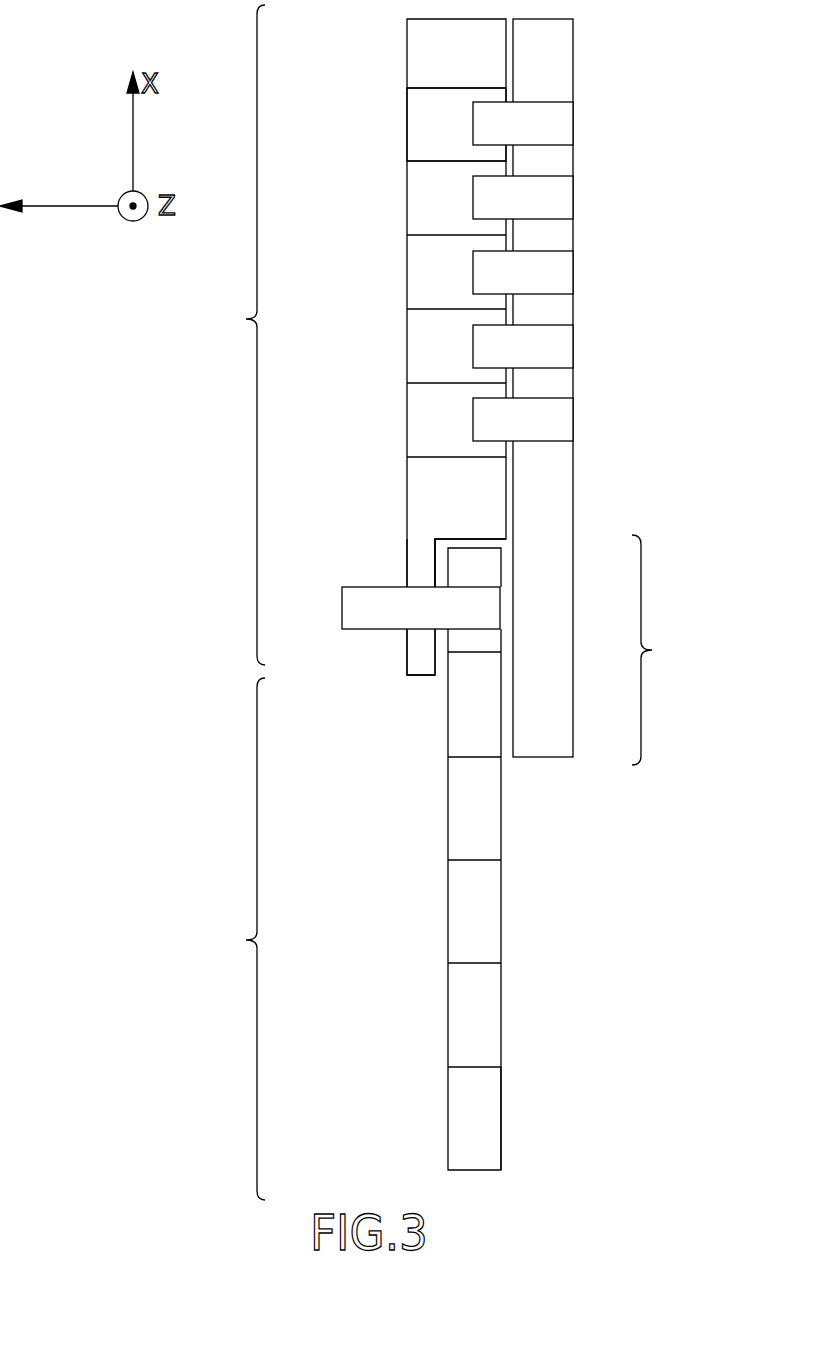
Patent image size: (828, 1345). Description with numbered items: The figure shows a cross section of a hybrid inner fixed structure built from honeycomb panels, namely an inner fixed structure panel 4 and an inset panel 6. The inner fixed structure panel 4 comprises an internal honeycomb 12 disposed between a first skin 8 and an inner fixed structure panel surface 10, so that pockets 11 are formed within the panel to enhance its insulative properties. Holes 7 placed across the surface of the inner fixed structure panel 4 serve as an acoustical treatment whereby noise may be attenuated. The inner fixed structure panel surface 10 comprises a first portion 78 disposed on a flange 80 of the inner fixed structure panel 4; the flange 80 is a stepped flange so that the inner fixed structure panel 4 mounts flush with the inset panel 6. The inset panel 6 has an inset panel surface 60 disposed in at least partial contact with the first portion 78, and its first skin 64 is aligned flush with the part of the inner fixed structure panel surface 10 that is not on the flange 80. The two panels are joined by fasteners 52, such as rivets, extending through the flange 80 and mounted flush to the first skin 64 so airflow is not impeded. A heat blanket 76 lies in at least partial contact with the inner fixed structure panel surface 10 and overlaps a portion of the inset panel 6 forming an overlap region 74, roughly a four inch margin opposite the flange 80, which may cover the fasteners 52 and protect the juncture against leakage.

The inner fixed structure panel 4 is at (242, 335).
The inset panel 6 is at (242, 939).
The holes 7 is at (558, 127).
The first skin 8 is at (408, 555).
The inner fixed structure panel surface 10 is at (503, 512).
The pockets 11 is at (442, 133).
The internal honeycomb 12 is at (437, 88).
The fasteners 52 is at (355, 598).
The inset panel surface 60 is at (448, 1145).
The first skin 64 is at (500, 1140).
The overlap region 74 is at (660, 650).
The heat blanket 76 is at (550, 53).
The first portion 78 is at (435, 564).
The flange 80 is at (418, 573).